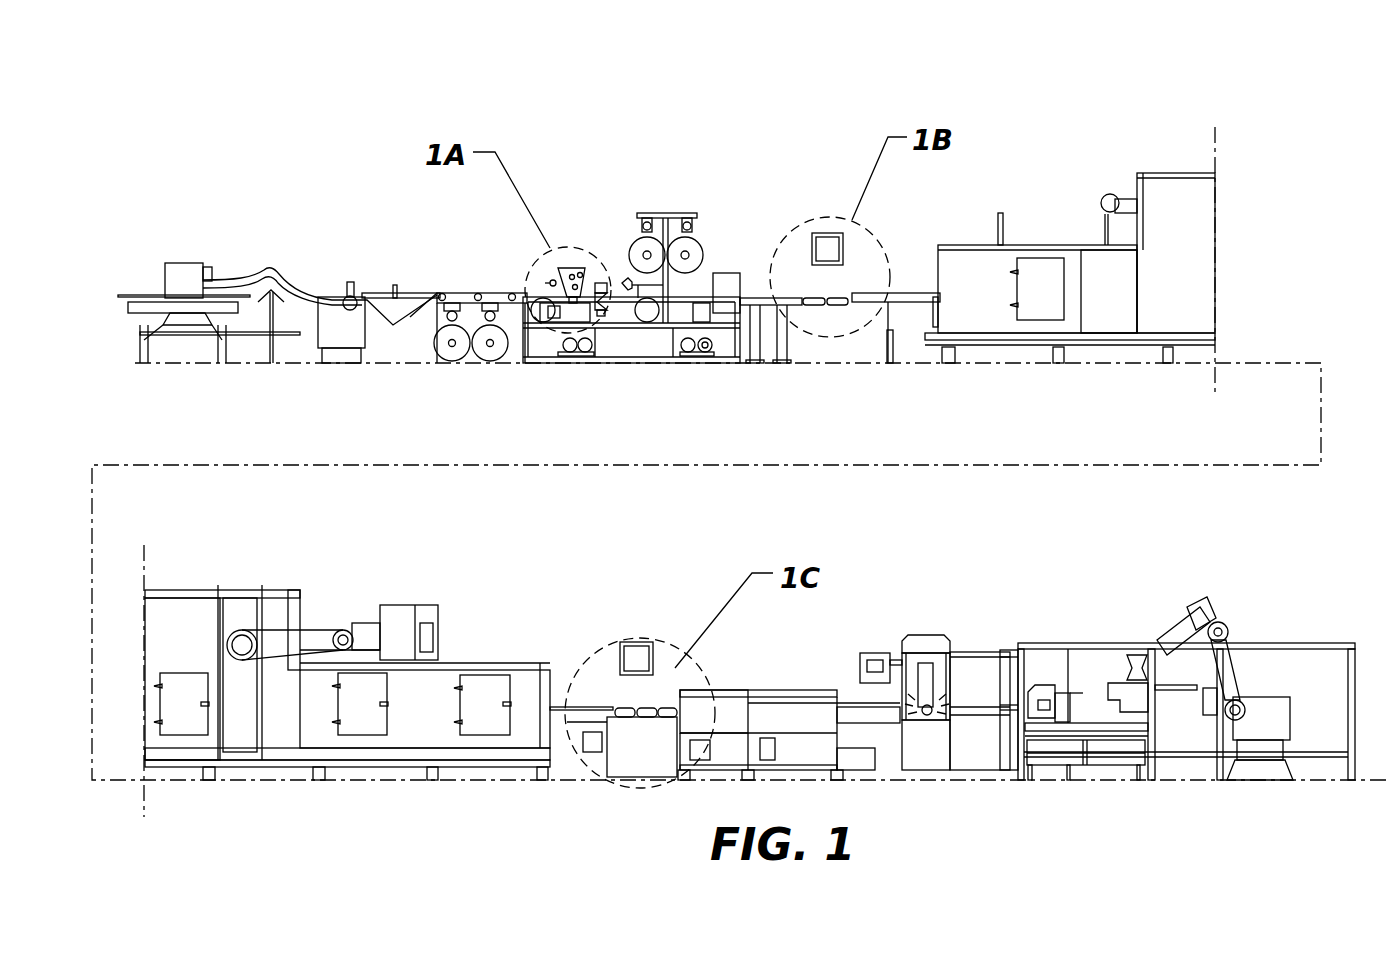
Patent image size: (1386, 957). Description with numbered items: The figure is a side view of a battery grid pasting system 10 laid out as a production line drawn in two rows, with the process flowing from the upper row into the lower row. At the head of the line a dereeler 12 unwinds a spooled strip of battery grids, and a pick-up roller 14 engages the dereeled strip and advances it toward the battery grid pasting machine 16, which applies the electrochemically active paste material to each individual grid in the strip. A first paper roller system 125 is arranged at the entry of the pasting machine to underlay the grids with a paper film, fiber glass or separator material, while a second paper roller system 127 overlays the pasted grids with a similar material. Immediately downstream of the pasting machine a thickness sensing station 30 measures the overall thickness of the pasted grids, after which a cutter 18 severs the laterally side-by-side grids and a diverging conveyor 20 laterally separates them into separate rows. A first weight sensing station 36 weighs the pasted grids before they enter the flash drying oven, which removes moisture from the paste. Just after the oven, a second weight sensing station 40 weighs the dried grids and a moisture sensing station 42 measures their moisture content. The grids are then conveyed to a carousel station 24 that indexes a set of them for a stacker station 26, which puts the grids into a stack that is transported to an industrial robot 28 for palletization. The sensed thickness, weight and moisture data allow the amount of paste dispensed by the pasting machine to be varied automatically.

The battery grid pasting system 10 is at (1172, 97).
The dereeler 12 is at (186, 262).
The pick-up roller 14 is at (345, 296).
The first paper roller system 125 is at (487, 366).
The battery grid pasting machine 16 is at (571, 264).
The thickness sensing station 30 is at (599, 278).
The second paper roller system 127 is at (668, 211).
The cutter 18 is at (725, 271).
The diverging conveyor 20 is at (757, 296).
The first weight sensing station 36 is at (833, 294).
The second weight sensing station 40 is at (622, 705).
The moisture sensing station 42 is at (666, 705).
The carousel station 24 is at (923, 632).
The stacker station 26 is at (1037, 681).
The industrial robot 28 is at (1180, 621).